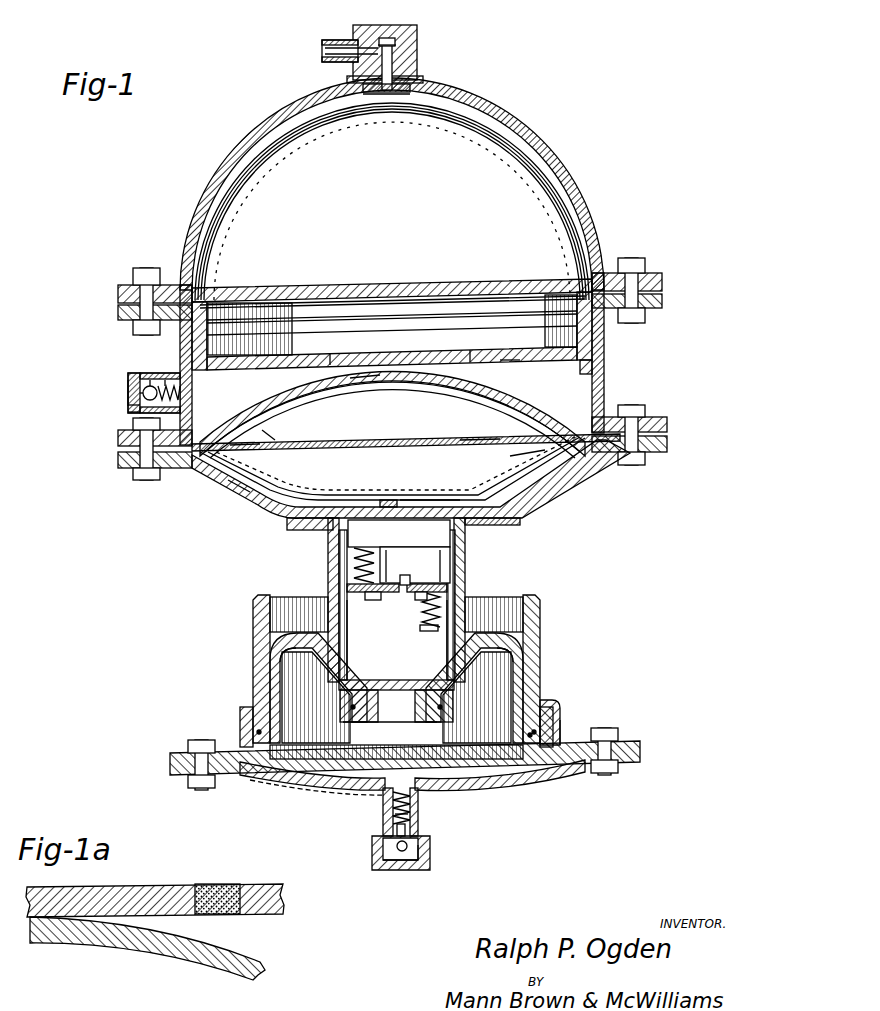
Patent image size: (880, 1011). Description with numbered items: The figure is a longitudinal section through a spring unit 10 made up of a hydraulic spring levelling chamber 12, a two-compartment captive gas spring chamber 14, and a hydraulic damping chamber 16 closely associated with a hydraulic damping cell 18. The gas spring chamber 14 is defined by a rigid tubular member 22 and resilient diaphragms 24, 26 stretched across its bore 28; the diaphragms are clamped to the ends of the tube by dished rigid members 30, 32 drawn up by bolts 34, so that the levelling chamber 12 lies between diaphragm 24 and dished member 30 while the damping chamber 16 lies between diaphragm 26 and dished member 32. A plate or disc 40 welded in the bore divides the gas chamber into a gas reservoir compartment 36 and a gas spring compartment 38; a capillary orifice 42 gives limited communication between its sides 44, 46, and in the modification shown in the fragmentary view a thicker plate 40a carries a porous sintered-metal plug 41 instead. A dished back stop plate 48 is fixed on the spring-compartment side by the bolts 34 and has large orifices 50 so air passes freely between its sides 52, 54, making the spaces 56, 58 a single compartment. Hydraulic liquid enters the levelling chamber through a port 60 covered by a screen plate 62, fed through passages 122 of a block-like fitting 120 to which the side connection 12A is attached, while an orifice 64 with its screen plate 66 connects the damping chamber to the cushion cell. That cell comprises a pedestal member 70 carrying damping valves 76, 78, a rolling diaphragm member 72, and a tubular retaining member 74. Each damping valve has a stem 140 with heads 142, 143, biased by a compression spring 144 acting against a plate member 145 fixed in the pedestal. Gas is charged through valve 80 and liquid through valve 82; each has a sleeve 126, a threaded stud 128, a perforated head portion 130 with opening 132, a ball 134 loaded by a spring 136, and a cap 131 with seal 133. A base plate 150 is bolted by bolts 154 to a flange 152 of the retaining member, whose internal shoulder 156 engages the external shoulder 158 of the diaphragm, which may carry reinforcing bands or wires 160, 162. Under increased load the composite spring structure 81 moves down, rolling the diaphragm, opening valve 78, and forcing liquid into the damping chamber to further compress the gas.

In FIG. 1, the spring unit 10 is at (184, 192).
In FIG. 1, the hydraulic spring levelling chamber 12 is at (291, 130).
In FIG. 1, the inlet pipe 12A is at (340, 45).
In FIG. 1, the two-compartment captive gas spring chamber 14 is at (171, 351).
In FIG. 1, the hydraulic damping chamber 16 is at (540, 478).
In FIG. 1, the hydraulic damping cell 18 is at (243, 627).
In FIG. 1, the rigid tubular member 22 is at (605, 338).
In FIG. 1, the resilient diaphragm 24 is at (452, 280).
In FIG. 1, the resilient diaphragm 26 is at (478, 438).
In FIG. 1, the bore 28 is at (240, 441).
In FIG. 1, the dished rigid member 30 is at (219, 175).
In FIG. 1, the dished rigid member 32 is at (228, 492).
In FIG. 1, the bolts 34 is at (162, 270).
In FIG. 1, the gas reservoir compartment 36 is at (369, 327).
In FIG. 1, the gas spring compartment 38 is at (334, 432).
In FIG. 1, the plate or disc 40 is at (412, 353).
In FIG. 1A, the plate section 40a is at (178, 892).
In FIG. 1A, the plug of sintered metal 41 is at (225, 890).
In FIG. 1, the orifice 42 is at (478, 352).
In FIG. 1, the side of disc 44 is at (540, 352).
In FIG. 1, the side of disc 46 is at (520, 366).
In FIG. 1, the dished back stop plate 48 is at (283, 432).
In FIG. 1A, the dished back stop plate 48 is at (125, 948).
In FIG. 1, the orifices 50 is at (303, 397).
In FIG. 1, the side of back stop plate 52 is at (285, 385).
In FIG. 1, the side of back stop plate 54 is at (378, 380).
In FIG. 1, the space 56 is at (520, 442).
In FIG. 1, the space 58 is at (594, 375).
In FIG. 1, the port 60 is at (420, 92).
In FIG. 1, the screen plate 62 is at (370, 96).
In FIG. 1, the orifice 64 is at (396, 500).
In FIG. 1, the screen plate 66 is at (425, 499).
In FIG. 1, the pedestal member 70 is at (467, 575).
In FIG. 1, the rolling diaphragm member 72 is at (525, 641).
In FIG. 1, the tubular retaining member 74 is at (256, 650).
In FIG. 1, the damping valve 76 is at (369, 625).
In FIG. 1, the damping valve 78 is at (438, 636).
In FIG. 1, the valve 80 is at (117, 387).
In FIG. 1, the composite spring structure 81 is at (118, 463).
In FIG. 1, the valve 82 is at (420, 876).
In FIG. 1, the block-like fitting 120 is at (418, 40).
In FIG. 1, the passages 122 is at (386, 40).
In FIG. 1, the sleeve 126 is at (383, 815).
In FIG. 1, the tubular screw-threaded stud 128 is at (408, 790).
In FIG. 1, the screw-threaded head portion 130 is at (373, 850).
In FIG. 1, the cap 131 is at (388, 870).
In FIG. 1, the perforation/opening 132 is at (428, 850).
In FIG. 1, the seal 133 is at (401, 862).
In FIG. 1, the ball 134 is at (418, 828).
In FIG. 1, the compression spring 136 is at (418, 812).
In FIG. 1, the stem 140 is at (455, 587).
In FIG. 1, the head 142 is at (421, 592).
In FIG. 1, the head 143 is at (370, 548).
In FIG. 1, the compression spring 144 is at (345, 572).
In FIG. 1, the plate member 145 is at (400, 575).
In FIG. 1, the base plate 150 is at (285, 785).
In FIG. 1, the flange 152 is at (632, 746).
In FIG. 1, the bolts 154 is at (202, 740).
In FIG. 1, the internal shoulder 156 is at (555, 706).
In FIG. 1, the external shoulder 158 is at (560, 720).
In FIG. 1, the reinforcing band or wire 160 is at (348, 720).
In FIG. 1, the reinforcing band or wire 162 is at (528, 736).